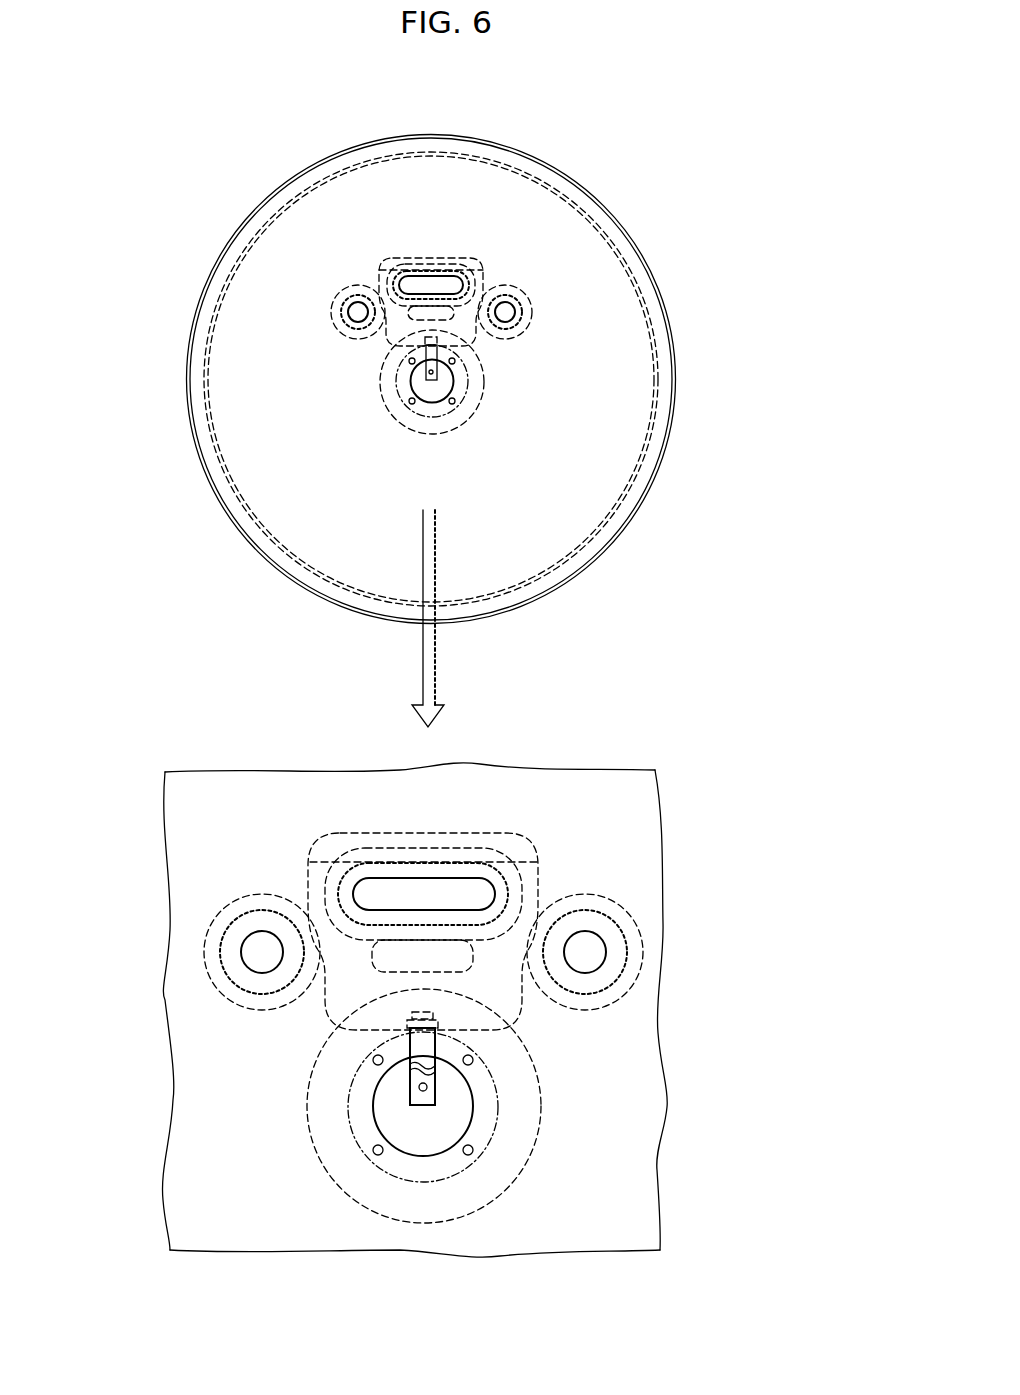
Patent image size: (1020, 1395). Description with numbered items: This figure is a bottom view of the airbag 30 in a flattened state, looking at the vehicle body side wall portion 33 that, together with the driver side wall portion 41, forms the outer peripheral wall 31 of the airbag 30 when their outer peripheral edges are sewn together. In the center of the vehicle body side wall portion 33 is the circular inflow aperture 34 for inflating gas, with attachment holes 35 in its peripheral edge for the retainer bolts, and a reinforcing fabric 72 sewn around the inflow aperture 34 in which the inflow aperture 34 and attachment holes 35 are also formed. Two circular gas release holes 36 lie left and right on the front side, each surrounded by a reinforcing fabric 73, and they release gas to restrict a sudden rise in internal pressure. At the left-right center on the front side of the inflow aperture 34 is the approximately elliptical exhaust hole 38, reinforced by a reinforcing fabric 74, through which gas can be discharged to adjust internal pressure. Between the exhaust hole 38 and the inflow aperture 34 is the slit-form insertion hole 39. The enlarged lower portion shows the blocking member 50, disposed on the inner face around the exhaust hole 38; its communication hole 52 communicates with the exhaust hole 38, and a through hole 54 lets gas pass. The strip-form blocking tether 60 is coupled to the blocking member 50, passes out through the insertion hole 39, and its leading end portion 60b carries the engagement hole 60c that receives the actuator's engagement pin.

The airbag 30 is at (625, 171).
The outer peripheral wall 31 is at (776, 255).
The vehicle body side wall portion 33 is at (605, 302).
The inflow aperture 34 is at (432, 383).
The attachment holes 35 is at (454, 403).
The gas release holes 36 is at (358, 311).
The exhaust hole 38 is at (434, 285).
The insertion hole 39 is at (427, 1024).
The driver side wall portion 41 is at (610, 375).
The blocking member 50 is at (317, 1008).
The communication hole 52 is at (442, 880).
The through hole 54 is at (340, 1022).
The blocking tether 60 is at (610, 748).
The leading end portion 60b is at (436, 1097).
The engagement hole 60c is at (427, 1087).
The reinforcing fabric 72 is at (513, 1148).
The reinforcing fabric 73 is at (203, 955).
The reinforcing fabric 74 is at (343, 838).